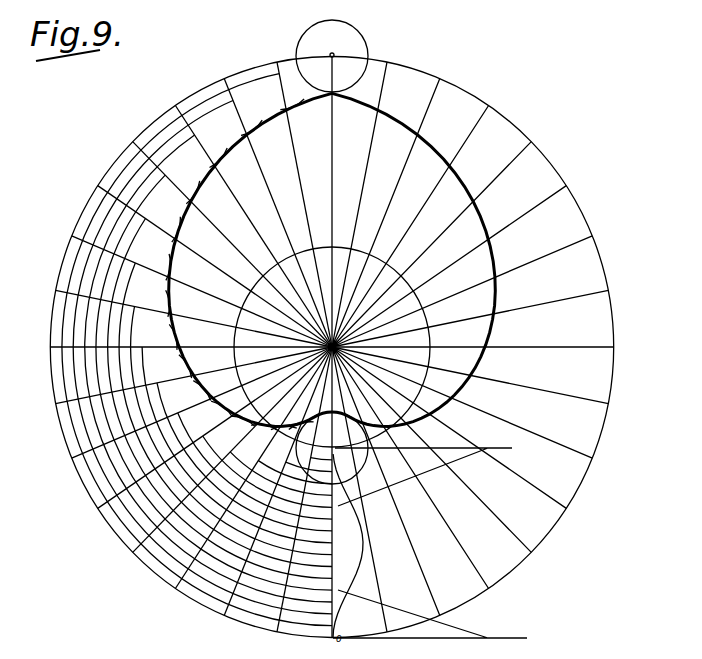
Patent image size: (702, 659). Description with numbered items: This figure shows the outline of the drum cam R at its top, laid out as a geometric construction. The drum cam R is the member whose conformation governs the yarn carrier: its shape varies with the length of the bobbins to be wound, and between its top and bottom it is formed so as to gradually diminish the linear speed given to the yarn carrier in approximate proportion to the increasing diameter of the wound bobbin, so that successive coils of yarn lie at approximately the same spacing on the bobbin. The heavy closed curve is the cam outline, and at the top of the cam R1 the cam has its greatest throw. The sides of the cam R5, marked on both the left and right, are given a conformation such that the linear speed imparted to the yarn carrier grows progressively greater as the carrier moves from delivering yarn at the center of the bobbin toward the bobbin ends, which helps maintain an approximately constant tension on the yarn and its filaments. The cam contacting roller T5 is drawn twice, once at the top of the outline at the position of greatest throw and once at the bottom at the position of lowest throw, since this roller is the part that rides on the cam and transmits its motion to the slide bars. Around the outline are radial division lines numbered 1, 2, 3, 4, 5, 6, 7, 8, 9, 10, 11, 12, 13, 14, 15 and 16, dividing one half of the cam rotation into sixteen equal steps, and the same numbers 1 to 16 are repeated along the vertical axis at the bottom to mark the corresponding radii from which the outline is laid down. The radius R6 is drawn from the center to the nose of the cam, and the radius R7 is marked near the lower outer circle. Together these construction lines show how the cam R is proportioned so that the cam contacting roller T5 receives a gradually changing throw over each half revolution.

The cam contacting roller T5 is at (383, 468).
The drum cam R is at (582, 217).
The top of cam R1 is at (456, 174).
The sides of cam R5 is at (494, 298).
The radius to cam nose R6 is at (334, 92).
The displacement arc radius R7 is at (222, 613).
The division 1 is at (306, 334).
The division 2 is at (280, 337).
The division 3 is at (256, 345).
The division 4 is at (236, 358).
The division 5 is at (220, 376).
The division 6 is at (209, 396).
The division 7 is at (202, 420).
The division 8 is at (323, 443).
The division 9 is at (203, 441).
The division 10 is at (211, 435).
The division 11 is at (222, 435).
The division 12 is at (237, 458).
The division 13 is at (257, 477).
The division 14 is at (281, 489).
The division 15 is at (308, 497).
The division 16 is at (466, 358).